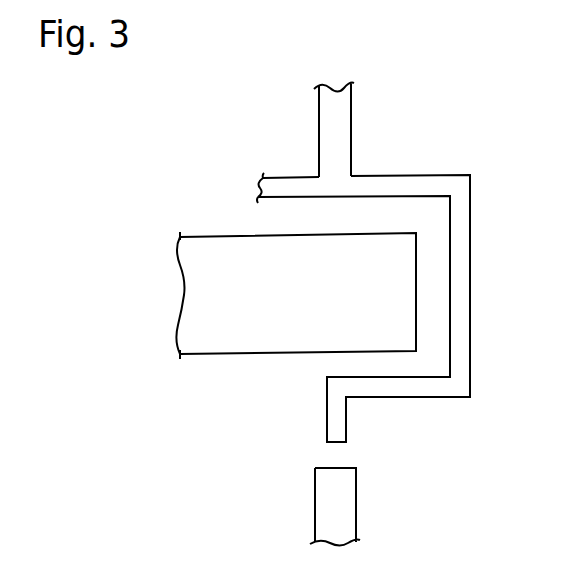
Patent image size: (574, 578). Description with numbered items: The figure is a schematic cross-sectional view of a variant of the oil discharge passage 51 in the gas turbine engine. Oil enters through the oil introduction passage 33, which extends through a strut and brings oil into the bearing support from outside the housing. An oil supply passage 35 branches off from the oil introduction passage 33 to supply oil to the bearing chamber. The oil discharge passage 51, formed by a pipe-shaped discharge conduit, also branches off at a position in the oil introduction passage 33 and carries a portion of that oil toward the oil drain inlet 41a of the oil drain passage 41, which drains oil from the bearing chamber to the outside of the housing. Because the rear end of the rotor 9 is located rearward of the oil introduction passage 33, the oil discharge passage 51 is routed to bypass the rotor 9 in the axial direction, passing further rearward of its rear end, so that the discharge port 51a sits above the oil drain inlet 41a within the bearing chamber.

The oil introduction passage 33 is at (343, 131).
The oil supply passage 35 is at (285, 187).
The oil discharge passage 51 is at (459, 221).
The discharge port 51a is at (336, 444).
The rotor 9 is at (227, 355).
The oil drain passage 41 is at (345, 507).
The oil drain inlet 41a is at (345, 467).